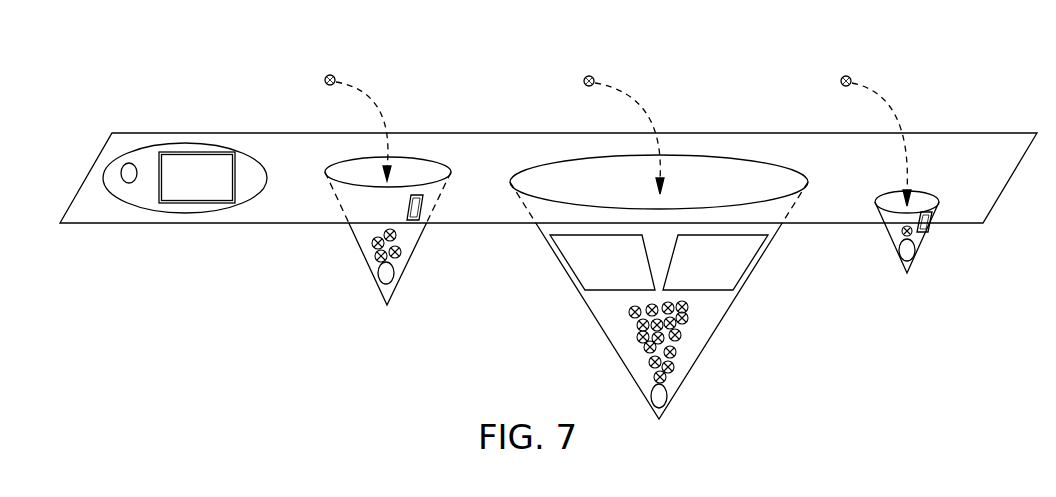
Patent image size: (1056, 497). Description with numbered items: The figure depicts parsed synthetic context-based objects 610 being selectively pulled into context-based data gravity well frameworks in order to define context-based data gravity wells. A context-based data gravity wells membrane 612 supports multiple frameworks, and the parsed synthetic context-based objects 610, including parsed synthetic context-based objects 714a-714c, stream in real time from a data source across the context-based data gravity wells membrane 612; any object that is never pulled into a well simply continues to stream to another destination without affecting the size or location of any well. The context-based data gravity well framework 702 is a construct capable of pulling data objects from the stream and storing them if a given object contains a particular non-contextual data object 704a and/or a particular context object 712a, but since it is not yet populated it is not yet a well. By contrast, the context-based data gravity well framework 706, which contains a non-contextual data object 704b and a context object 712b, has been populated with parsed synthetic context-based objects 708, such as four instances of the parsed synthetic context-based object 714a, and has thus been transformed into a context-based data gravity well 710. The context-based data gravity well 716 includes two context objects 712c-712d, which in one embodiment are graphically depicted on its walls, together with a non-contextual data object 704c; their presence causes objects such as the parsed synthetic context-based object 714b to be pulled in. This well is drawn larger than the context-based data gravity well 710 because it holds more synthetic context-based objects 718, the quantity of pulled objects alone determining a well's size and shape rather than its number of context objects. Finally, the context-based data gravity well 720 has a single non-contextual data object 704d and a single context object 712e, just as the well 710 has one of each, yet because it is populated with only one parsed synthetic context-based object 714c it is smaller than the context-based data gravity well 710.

The parsed synthetic context-based objects 610 is at (343, 48).
The context-based data gravity wells membrane 612 is at (1000, 143).
The context-based data gravity well framework 702 is at (185, 214).
The non-contextual data object 704a is at (124, 165).
The non-contextual data object 704b is at (382, 285).
The non-contextual data object 704c is at (650, 396).
The non-contextual data object 704d is at (903, 262).
The context-based data gravity well framework 706 is at (384, 242).
The parsed synthetic context-based objects 708 is at (401, 252).
The context-based data gravity well 710 is at (396, 293).
The context object 712a is at (213, 151).
The context object 712b is at (424, 203).
The context object 712c is at (560, 268).
The context object 712d is at (760, 268).
The context object 712e is at (930, 218).
The parsed synthetic context-based object 714a is at (298, 102).
The parsed synthetic context-based object 714b is at (589, 76).
The parsed synthetic context-based object 714c is at (846, 76).
The context-based data gravity well 716 is at (694, 365).
The synthetic context-based objects 718 is at (648, 362).
The context-based data gravity well 720 is at (917, 250).